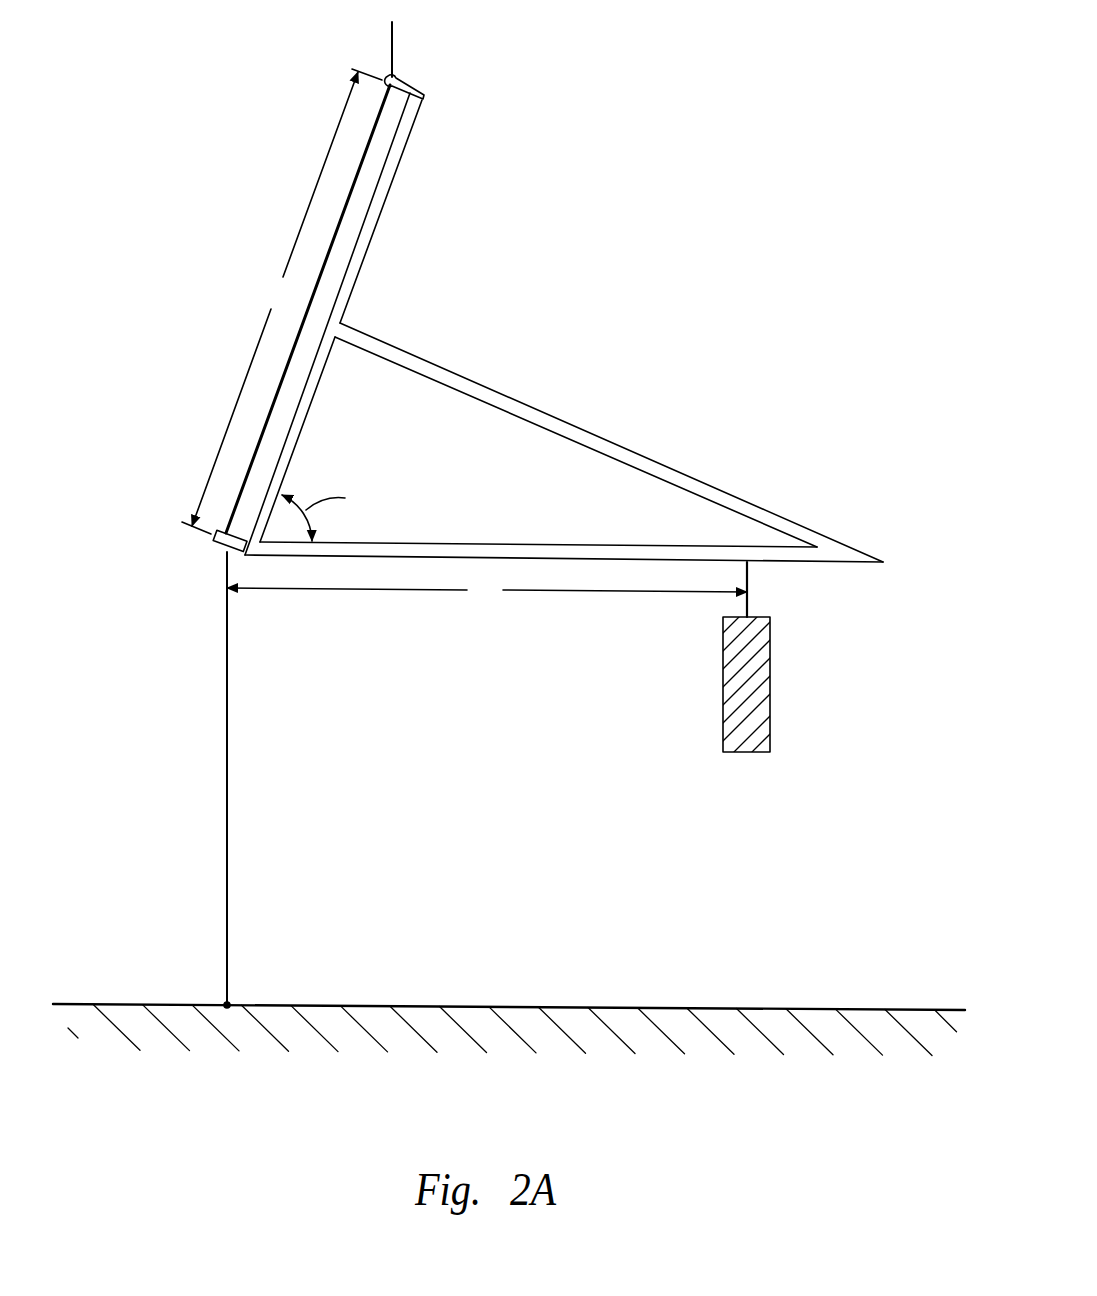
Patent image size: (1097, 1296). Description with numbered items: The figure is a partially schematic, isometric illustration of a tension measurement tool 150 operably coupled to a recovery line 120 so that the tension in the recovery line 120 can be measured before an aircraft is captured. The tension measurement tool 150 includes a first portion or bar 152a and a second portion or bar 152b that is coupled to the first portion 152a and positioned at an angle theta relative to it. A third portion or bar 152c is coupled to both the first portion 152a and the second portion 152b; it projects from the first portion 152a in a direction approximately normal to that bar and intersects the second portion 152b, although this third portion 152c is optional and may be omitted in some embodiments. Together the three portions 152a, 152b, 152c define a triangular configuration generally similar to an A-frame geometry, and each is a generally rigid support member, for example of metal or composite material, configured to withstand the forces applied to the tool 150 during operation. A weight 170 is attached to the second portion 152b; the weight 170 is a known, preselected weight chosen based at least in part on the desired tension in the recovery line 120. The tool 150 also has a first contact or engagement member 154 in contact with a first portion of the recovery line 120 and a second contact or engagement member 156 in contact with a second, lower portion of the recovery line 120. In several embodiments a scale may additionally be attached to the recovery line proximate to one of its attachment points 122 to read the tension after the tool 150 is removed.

The recovery line 120 is at (394, 48).
The attachment point 122 is at (226, 1009).
The tension measurement tool 150 is at (705, 166).
The first portion or bar 152a is at (402, 160).
The second portion or bar 152b is at (527, 543).
The third portion or bar 152c is at (568, 422).
The first contact or engagement member 154 is at (427, 77).
The second contact or engagement member 156 is at (220, 552).
The weight 170 is at (759, 753).